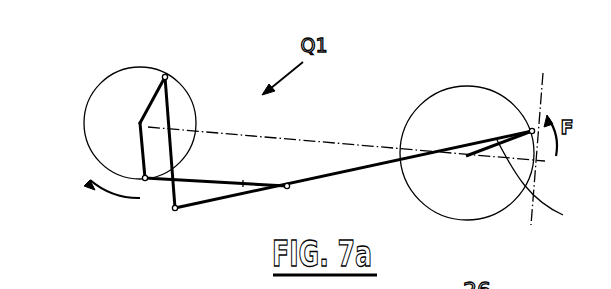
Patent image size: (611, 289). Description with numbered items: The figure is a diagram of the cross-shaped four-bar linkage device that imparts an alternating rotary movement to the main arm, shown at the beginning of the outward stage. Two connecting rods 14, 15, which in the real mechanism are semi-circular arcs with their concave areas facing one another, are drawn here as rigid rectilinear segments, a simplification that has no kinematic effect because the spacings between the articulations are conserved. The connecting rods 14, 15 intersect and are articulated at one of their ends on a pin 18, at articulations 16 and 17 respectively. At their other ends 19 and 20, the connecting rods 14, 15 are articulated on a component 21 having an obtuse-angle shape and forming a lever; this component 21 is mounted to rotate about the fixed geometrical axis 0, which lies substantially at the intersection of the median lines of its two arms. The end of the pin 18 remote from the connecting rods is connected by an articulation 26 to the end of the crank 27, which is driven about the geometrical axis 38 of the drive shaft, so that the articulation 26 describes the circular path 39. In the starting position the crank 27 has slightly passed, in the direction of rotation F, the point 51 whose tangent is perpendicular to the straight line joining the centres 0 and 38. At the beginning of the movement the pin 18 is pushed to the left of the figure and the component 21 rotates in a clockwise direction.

The fixed geometrical axis 0 is at (139, 122).
The connecting rod 14 is at (243, 181).
The connecting rod 15 is at (168, 115).
The articulation 16 is at (288, 184).
The articulation 17 is at (177, 211).
The pin 18 is at (340, 177).
The end of connecting rod 19 is at (146, 181).
The end of connecting rod 20 is at (168, 75).
The component forming a lever 21 is at (141, 142).
The articulation 26 is at (532, 127).
The crank 27 is at (543, 183).
The geometrical axis of the shaft 38 is at (466, 157).
The circular path 39 is at (435, 90).
The point 51 is at (537, 162).